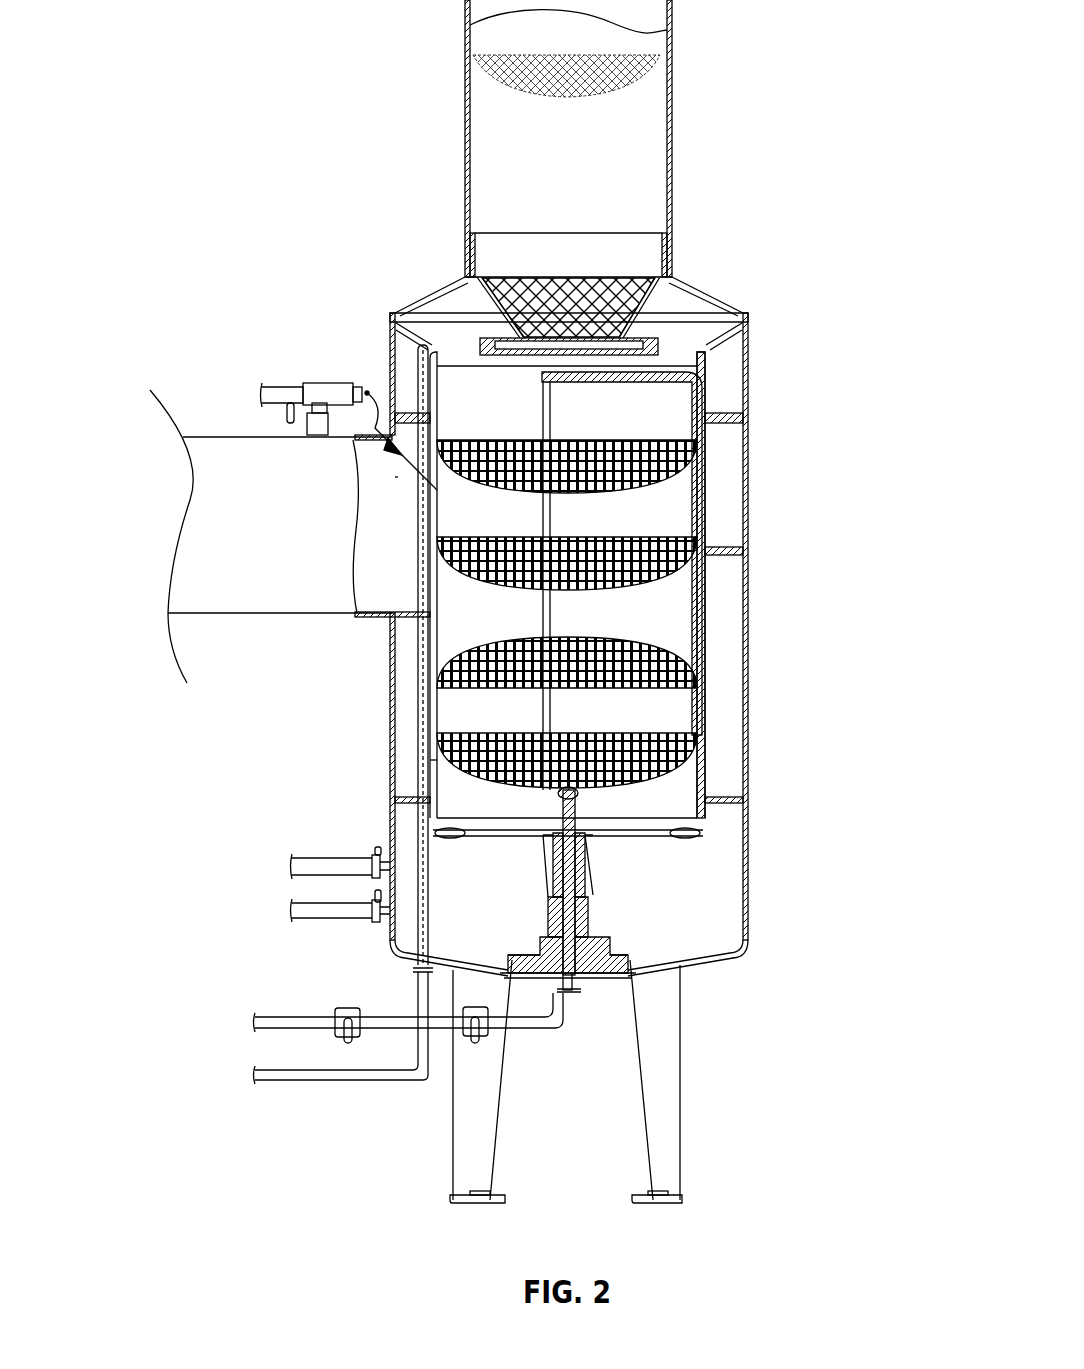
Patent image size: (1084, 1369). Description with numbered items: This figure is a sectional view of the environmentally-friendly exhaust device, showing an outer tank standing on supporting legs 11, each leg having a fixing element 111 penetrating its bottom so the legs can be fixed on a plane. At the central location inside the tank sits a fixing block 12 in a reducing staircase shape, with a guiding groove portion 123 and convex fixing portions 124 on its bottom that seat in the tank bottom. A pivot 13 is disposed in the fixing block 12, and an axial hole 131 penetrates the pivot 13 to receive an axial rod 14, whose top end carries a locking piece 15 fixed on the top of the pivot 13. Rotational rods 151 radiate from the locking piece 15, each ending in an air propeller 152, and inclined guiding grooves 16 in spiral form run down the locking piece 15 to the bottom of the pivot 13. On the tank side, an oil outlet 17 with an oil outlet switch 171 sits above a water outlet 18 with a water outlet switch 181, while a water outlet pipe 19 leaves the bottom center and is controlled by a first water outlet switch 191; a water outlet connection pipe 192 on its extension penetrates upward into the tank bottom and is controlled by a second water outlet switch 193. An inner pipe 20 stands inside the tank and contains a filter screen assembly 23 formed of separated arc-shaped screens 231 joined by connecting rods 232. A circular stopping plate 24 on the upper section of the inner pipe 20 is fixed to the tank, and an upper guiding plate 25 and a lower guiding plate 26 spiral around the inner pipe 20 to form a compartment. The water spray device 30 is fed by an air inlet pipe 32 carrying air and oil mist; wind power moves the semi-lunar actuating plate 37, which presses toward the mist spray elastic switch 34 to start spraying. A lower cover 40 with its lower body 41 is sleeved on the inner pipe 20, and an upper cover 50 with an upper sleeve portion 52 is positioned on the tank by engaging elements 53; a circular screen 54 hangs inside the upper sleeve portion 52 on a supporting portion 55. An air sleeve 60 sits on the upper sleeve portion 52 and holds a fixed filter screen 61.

The supporting legs 11 is at (690, 1152).
The fixing element 111 is at (450, 1200).
The fixing block 12 is at (612, 937).
The guiding groove portion 123 is at (515, 957).
The convex fixing portions 124 is at (628, 962).
The pivot 13 is at (585, 985).
The axial hole 131 is at (590, 993).
The axial rod 14 is at (640, 795).
The locking piece 15 is at (555, 830).
The rotational rods 151 is at (600, 832).
The air propeller 152 is at (700, 833).
The inclined guiding grooves 16 is at (590, 875).
The oil outlet 17 is at (330, 858).
The oil outlet switch 171 is at (375, 850).
The water outlet 18 is at (375, 893).
The water outlet switch 181 is at (330, 920).
The water outlet pipe 19 is at (522, 1020).
The first water outlet switch 191 is at (474, 1040).
The water outlet connection pipe 192 is at (415, 968).
The second water outlet switch 193 is at (338, 1036).
The inner pipe 20 is at (703, 455).
The filter screen assembly 23 is at (705, 655).
The arc-shaped screens 231 is at (700, 470).
The connecting rods 232 is at (705, 627).
The circular stopping plate 24 is at (740, 415).
The upper guiding plate 25 is at (437, 765).
The lower guiding plate 26 is at (740, 800).
The water spray device 30 is at (270, 362).
The air inlet pipe 32 is at (240, 437).
The mist spray elastic switch 34 is at (357, 380).
The actuating plate 37 is at (397, 477).
The lower cover 40 is at (735, 344).
The lower body 41 is at (748, 313).
The upper cover 50 is at (716, 290).
The upper sleeve portion 52 is at (672, 243).
The engaging elements 53 is at (393, 312).
The circular screen 54 is at (497, 320).
The supporting portion 55 is at (500, 345).
The air sleeve 60 is at (672, 88).
The fixed filter screen 61 is at (655, 60).